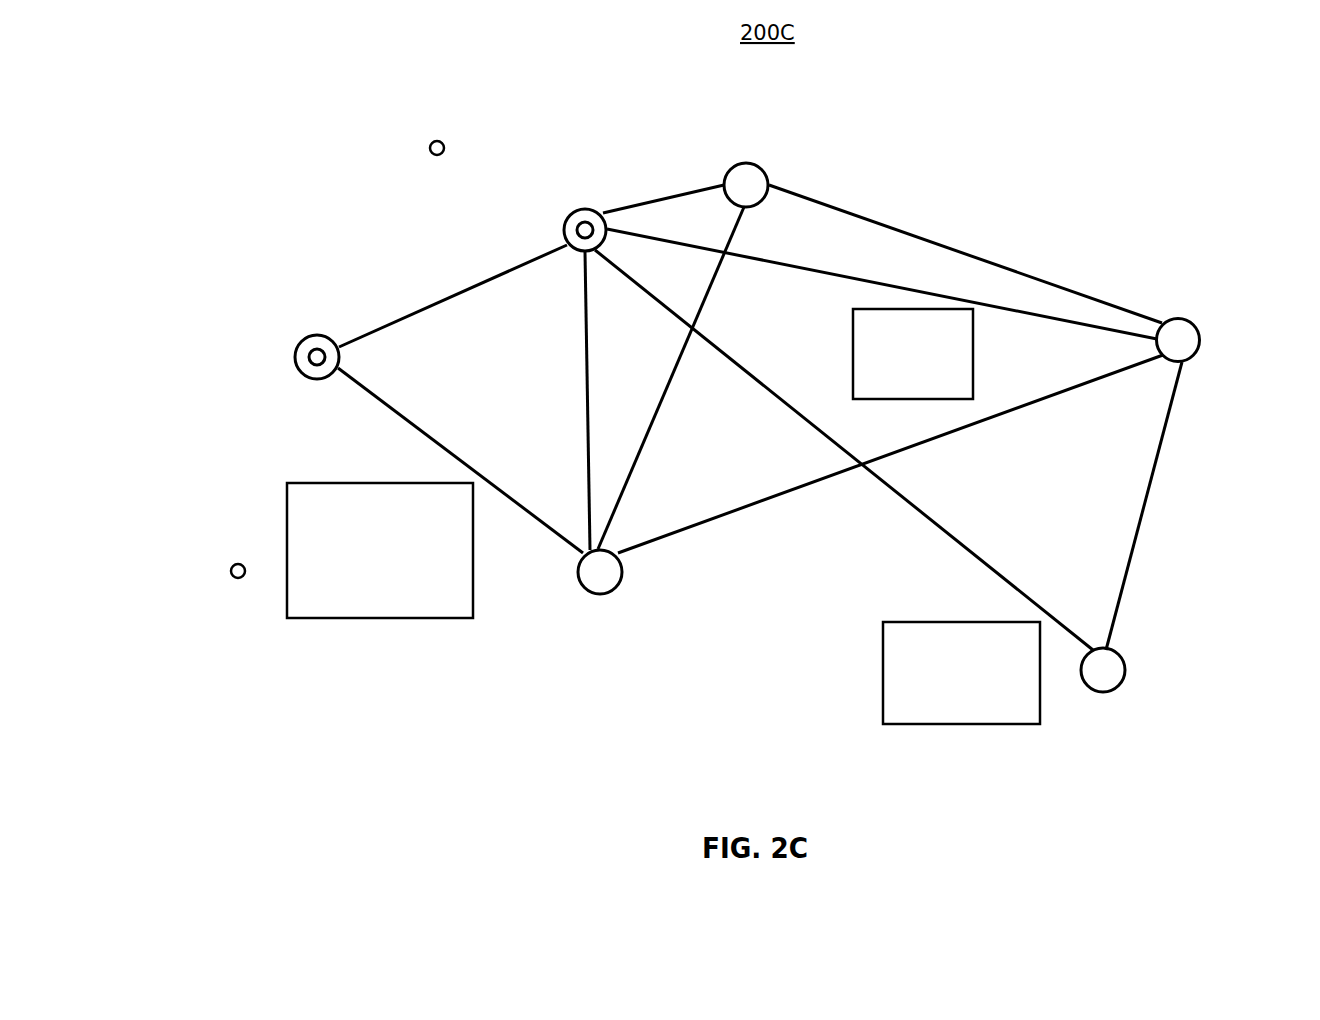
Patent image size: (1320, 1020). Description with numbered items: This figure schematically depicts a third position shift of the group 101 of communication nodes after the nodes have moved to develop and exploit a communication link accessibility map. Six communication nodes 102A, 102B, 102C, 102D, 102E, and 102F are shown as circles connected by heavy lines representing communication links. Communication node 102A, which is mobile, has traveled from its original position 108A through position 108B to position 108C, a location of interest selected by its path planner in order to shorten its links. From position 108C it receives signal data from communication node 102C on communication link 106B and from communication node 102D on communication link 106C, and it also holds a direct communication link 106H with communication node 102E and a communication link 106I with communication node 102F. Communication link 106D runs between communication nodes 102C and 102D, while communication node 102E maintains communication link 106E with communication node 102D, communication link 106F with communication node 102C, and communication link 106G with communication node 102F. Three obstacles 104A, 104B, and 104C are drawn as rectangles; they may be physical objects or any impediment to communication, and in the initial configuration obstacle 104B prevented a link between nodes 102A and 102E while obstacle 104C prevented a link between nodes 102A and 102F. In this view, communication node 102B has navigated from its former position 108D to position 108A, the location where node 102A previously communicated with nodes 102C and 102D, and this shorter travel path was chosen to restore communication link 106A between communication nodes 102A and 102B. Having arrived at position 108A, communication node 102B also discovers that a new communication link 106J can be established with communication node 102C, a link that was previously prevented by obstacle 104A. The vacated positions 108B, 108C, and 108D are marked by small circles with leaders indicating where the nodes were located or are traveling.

The group of communication nodes 101 is at (1008, 128).
The communication node 102A is at (568, 214).
The communication node 102B is at (304, 338).
The communication node 102C is at (620, 565).
The communication node 102D is at (757, 163).
The communication node 102E is at (1178, 319).
The communication node 102F is at (1118, 652).
The obstacle 104A is at (380, 550).
The obstacle 104B is at (913, 354).
The obstacle 104C is at (961, 673).
The communication link 106A is at (438, 302).
The communication link 106B is at (586, 348).
The communication link 106C is at (614, 209).
The communication link 106D is at (712, 282).
The communication link 106E is at (906, 232).
The communication link 106F is at (777, 496).
The communication link 106G is at (1160, 448).
The communication link 106H is at (992, 307).
The communication link 106I is at (908, 502).
The communication link 106J is at (393, 410).
The position 108A is at (317, 365).
The position 108B is at (437, 141).
The position 108C is at (585, 209).
The position 108D is at (231, 571).